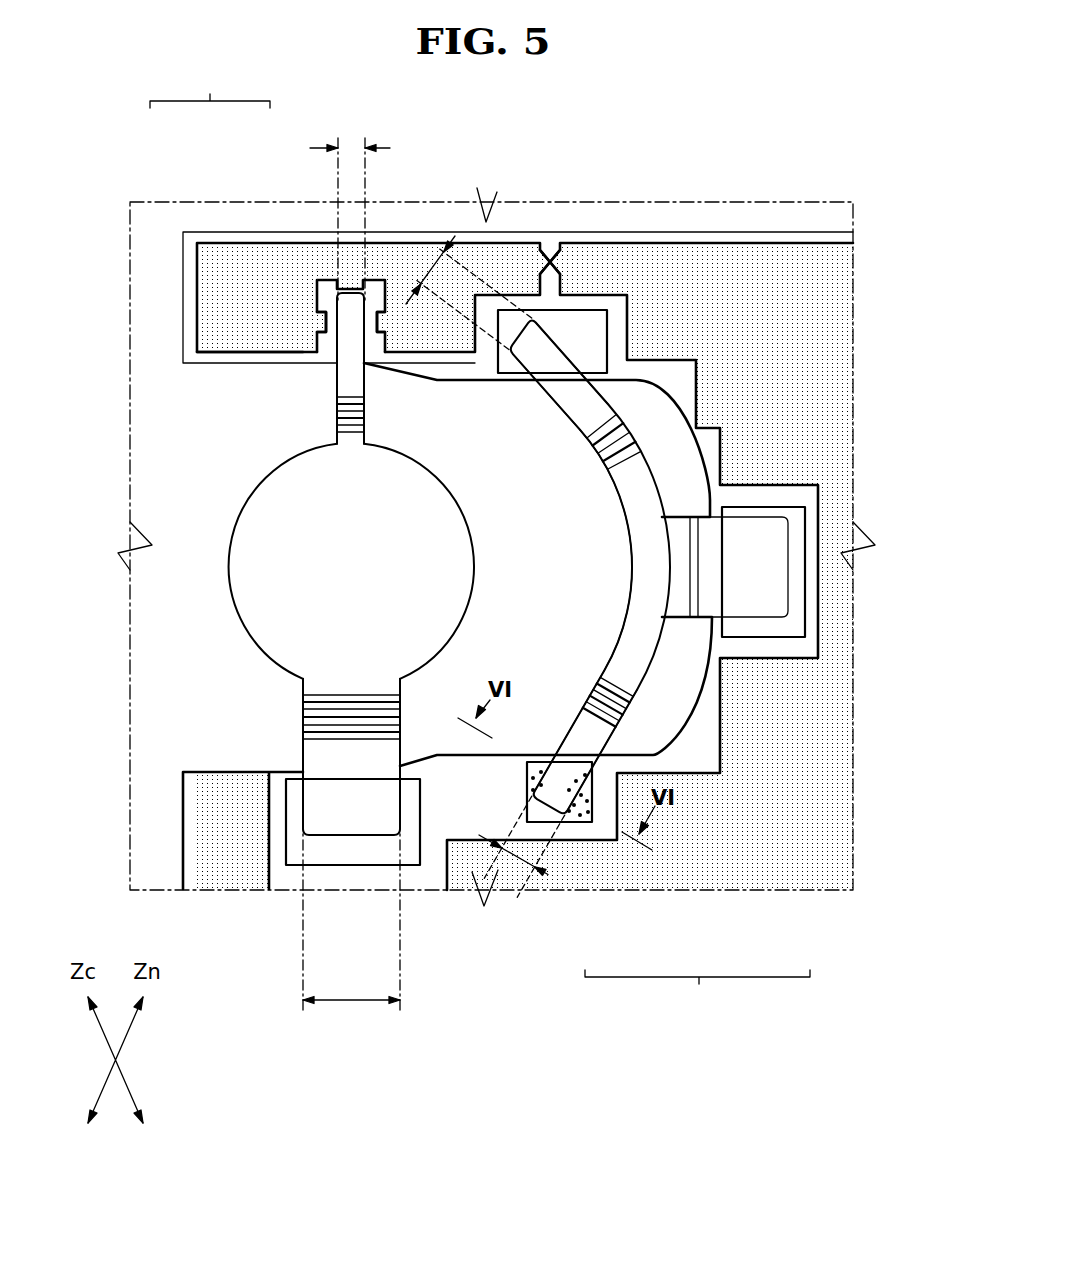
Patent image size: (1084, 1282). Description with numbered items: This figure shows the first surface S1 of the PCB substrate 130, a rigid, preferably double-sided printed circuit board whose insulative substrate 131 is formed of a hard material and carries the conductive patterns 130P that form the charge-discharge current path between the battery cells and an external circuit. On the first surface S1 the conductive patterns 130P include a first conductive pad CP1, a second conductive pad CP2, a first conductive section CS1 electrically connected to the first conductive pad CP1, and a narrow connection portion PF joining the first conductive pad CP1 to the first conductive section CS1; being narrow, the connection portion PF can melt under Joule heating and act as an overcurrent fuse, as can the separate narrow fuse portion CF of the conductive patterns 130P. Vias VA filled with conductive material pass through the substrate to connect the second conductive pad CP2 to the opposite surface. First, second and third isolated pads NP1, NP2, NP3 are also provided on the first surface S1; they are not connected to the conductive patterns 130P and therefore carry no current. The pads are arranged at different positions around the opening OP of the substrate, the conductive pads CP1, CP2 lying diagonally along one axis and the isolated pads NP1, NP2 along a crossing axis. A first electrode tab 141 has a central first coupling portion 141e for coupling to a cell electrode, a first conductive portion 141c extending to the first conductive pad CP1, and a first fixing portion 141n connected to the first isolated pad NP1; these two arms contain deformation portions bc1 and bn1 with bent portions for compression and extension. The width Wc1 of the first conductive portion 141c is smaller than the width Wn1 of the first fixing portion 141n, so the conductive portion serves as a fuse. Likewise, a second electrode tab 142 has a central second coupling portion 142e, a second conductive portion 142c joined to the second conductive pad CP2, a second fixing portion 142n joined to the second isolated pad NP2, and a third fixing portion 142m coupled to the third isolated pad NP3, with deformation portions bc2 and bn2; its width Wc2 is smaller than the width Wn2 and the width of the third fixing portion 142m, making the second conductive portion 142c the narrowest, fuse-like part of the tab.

The PCB substrate 130 is at (176, 850).
The conductive patterns 130P is at (480, 542).
The insulative substrate 131 is at (195, 322).
The first electrode tab 141 is at (265, 637).
The first conductive portion 141c is at (340, 378).
The central first coupling portion 141e is at (254, 501).
The first fixing portion 141n is at (333, 832).
The second electrode tab 142 is at (729, 470).
The second conductive portion 142c is at (568, 762).
The central second coupling portion 142e is at (632, 565).
The third fixing portion 142m is at (763, 599).
The second fixing portion 142n is at (525, 338).
The first conductive section CS1 is at (222, 260).
The first conductive pad CP1 is at (333, 290).
The second conductive pad CP2 is at (590, 824).
The fuse portion CF is at (556, 268).
The first isolated pad NP1 is at (409, 860).
The second isolated pad NP2 is at (590, 333).
The third isolated pad NP3 is at (793, 517).
The connection portion PF is at (322, 322).
The first surface S1 is at (195, 268).
The opening OP is at (230, 665).
The vias VA is at (577, 824).
The deformation portion bc1 is at (362, 417).
The deformation portion bc2 is at (587, 693).
The deformation portion bn1 is at (303, 707).
The deformation portion bn2 is at (578, 432).
The width of first conductive portion Wc1 is at (350, 207).
The width of first fixing portion Wn1 is at (351, 895).
The width of second conductive portion Wc2 is at (492, 846).
The width of second fixing portion Wn2 is at (410, 298).